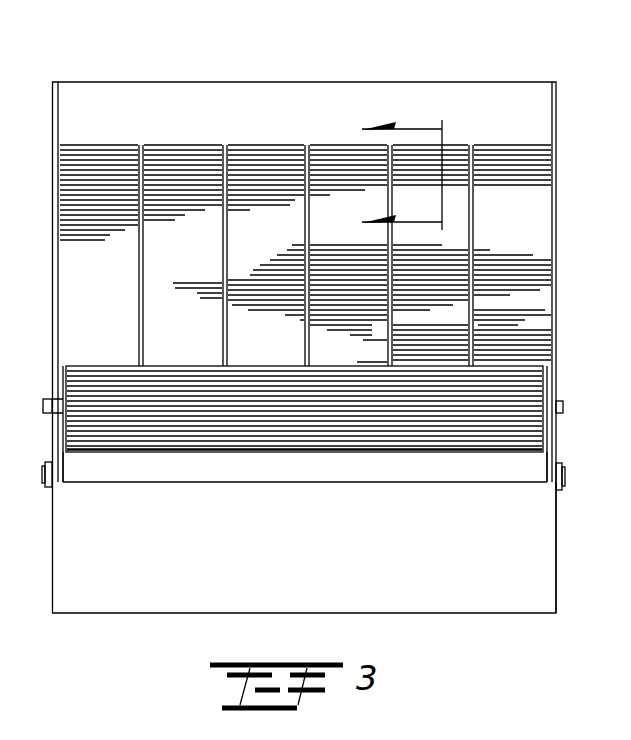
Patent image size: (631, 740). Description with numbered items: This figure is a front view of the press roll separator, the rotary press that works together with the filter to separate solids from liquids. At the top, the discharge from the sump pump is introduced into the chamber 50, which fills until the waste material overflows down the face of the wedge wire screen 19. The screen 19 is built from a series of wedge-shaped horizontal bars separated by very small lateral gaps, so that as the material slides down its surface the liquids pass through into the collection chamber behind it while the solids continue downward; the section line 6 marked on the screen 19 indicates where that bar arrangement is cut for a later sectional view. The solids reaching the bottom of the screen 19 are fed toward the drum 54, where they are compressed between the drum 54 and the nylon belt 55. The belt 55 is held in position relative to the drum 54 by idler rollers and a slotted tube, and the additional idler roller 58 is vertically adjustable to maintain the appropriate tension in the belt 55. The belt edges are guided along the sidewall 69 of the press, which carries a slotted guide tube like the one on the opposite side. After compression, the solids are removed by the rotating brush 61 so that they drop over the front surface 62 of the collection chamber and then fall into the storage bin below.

The chamber 50 is at (478, 92).
The wedge wire screen 19 is at (538, 263).
The drum 54 is at (530, 367).
The rotating brush 61 is at (542, 384).
The idler roller 58 is at (548, 458).
The belt 55 is at (452, 475).
The sidewall 69 is at (555, 527).
The front surface 62 is at (540, 573).
The section line 6- 6 is at (390, 176).